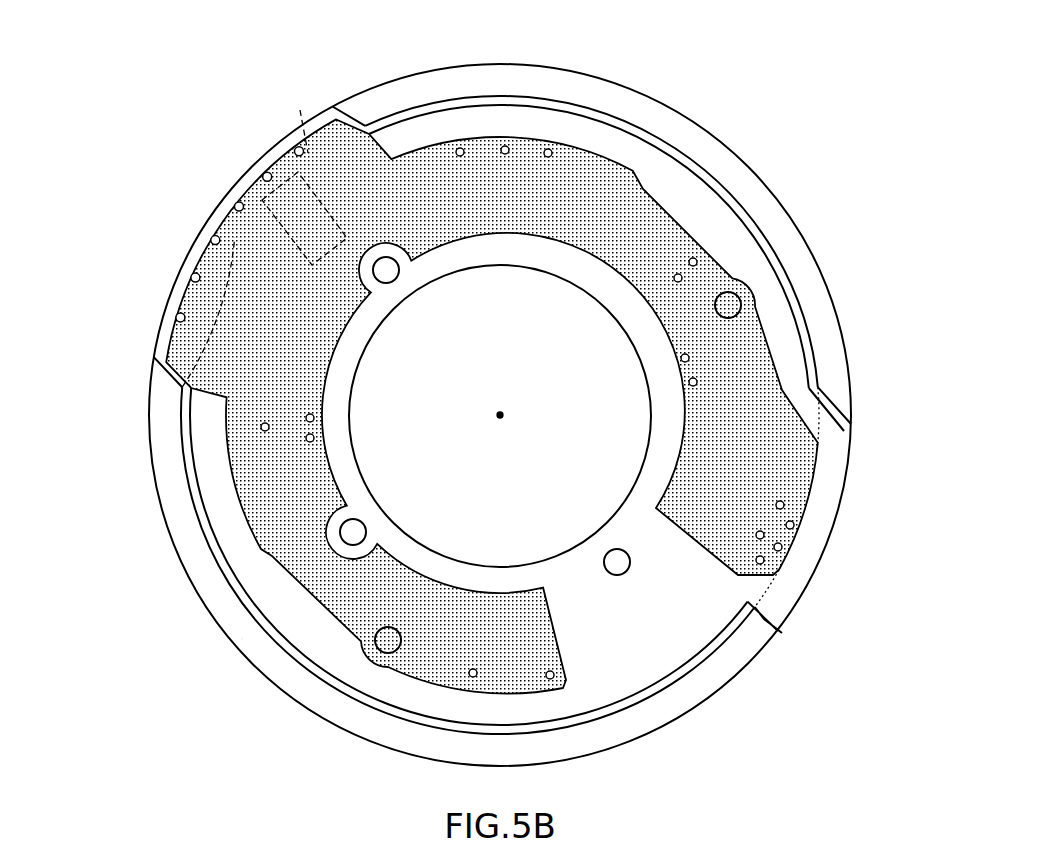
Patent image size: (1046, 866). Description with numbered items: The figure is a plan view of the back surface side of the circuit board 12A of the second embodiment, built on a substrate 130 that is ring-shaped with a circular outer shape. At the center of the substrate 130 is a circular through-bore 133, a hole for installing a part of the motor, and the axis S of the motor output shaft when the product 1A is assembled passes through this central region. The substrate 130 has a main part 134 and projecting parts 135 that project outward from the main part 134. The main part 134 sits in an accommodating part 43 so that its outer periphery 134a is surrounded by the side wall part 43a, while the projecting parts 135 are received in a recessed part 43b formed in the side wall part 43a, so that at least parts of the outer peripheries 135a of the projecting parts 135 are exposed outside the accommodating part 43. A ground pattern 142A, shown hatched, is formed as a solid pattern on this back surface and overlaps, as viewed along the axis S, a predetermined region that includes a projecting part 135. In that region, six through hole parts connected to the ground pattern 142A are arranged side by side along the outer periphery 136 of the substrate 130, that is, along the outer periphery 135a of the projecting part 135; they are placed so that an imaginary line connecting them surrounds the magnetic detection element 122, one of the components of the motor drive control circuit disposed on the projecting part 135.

The disk drive device 1A is at (832, 115).
The circuit board 12A is at (744, 206).
The substrate 130 is at (500, 415).
The accommodating part 43 is at (672, 96).
The side wall part 43a is at (650, 103).
The recessed part 43b is at (346, 103).
The magnetic detection element 122 is at (304, 172).
The through-bore 133 is at (556, 552).
The main part 134 is at (540, 118).
The outer periphery of the main part 134a is at (620, 121).
The projecting part 135 is at (168, 350).
The outer periphery of the projecting part 135a is at (183, 327).
The outer periphery of the substrate 136 is at (787, 497).
The ground pattern 142A is at (613, 196).
The axis S is at (503, 414).